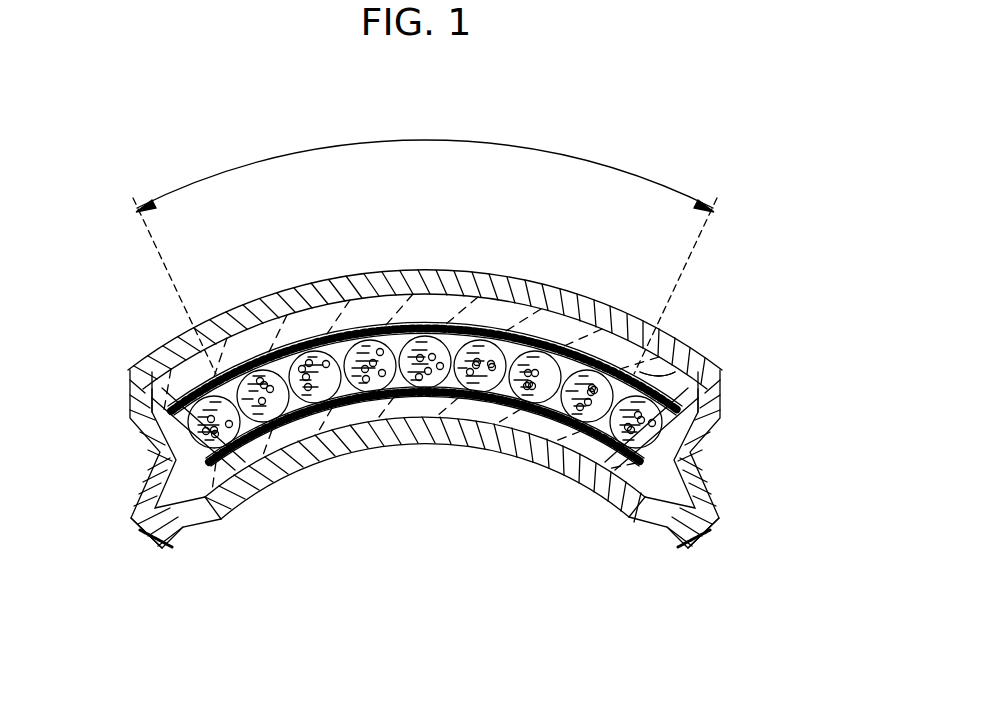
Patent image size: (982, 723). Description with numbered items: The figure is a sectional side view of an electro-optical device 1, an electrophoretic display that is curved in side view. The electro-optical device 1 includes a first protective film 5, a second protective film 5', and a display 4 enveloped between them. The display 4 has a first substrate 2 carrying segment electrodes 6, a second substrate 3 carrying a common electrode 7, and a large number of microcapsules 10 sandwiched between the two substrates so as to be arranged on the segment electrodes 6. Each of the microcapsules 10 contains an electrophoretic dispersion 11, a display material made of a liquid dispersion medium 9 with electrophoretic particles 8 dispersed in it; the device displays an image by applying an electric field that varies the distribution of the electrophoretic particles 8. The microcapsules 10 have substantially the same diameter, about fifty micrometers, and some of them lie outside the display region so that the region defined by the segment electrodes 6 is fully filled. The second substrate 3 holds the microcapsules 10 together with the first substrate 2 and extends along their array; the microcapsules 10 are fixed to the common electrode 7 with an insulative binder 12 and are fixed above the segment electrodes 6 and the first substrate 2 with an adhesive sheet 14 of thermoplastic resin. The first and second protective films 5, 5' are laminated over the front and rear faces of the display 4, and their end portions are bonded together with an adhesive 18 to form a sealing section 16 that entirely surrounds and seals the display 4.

The electro-optical device 1 is at (752, 250).
The first substrate 2 is at (617, 480).
The second substrate 3 is at (660, 370).
The display 4 is at (666, 424).
The first protective film 5 is at (425, 301).
The second protective film 5' is at (425, 474).
The segment electrodes 6 is at (573, 452).
The common electrode 7 is at (707, 376).
The electrophoretic particles 8 is at (262, 440).
The liquid dispersion medium 9 is at (222, 465).
The microcapsules 10 is at (186, 425).
The electrophoretic dispersion 11 is at (156, 455).
The binder 12 is at (293, 350).
The adhesive sheet 14 is at (352, 423).
The sealing section 16 is at (178, 536).
The adhesive 18 is at (150, 548).